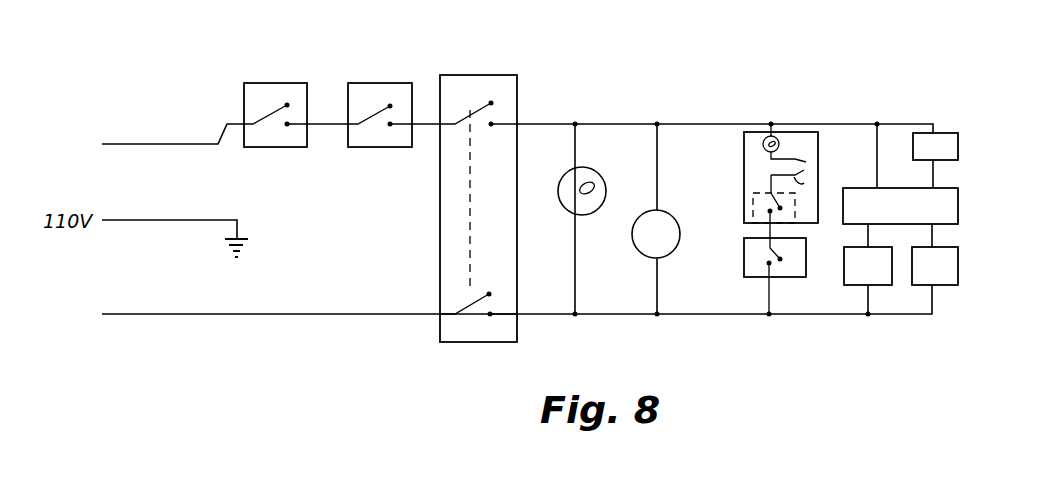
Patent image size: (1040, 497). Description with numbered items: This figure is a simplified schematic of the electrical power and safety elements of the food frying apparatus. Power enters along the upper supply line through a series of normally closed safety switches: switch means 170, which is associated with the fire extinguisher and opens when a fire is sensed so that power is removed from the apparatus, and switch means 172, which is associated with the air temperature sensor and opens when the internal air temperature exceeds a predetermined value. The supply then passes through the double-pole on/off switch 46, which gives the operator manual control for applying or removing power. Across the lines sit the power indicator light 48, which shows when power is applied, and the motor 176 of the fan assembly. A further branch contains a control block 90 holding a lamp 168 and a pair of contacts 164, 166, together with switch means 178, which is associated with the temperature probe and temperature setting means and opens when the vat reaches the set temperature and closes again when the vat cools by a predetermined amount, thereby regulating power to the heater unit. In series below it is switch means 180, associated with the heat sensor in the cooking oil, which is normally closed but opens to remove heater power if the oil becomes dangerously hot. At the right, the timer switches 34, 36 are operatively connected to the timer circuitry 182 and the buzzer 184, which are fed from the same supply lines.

The switch means 170 is at (277, 83).
The switch means 172 is at (380, 83).
The on/off switch 46 is at (485, 75).
The power indicator light 48 is at (600, 170).
The motor 176 is at (680, 237).
The control unit 90 is at (744, 150).
The lamp 168 is at (775, 137).
The contact 164 is at (806, 162).
The contact 166 is at (804, 183).
The switch means 178 is at (754, 203).
The switch means 180 is at (789, 278).
The buzzer 184 is at (958, 143).
The timer circuitry 182 is at (958, 202).
The timer switch 34 is at (853, 286).
The timer switch 36 is at (958, 268).